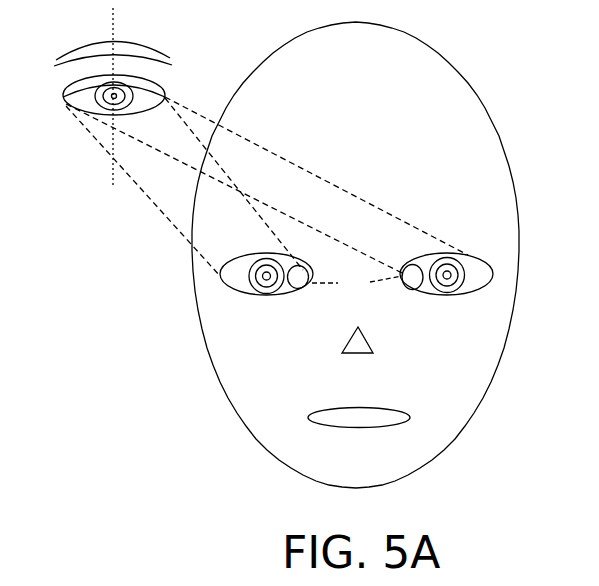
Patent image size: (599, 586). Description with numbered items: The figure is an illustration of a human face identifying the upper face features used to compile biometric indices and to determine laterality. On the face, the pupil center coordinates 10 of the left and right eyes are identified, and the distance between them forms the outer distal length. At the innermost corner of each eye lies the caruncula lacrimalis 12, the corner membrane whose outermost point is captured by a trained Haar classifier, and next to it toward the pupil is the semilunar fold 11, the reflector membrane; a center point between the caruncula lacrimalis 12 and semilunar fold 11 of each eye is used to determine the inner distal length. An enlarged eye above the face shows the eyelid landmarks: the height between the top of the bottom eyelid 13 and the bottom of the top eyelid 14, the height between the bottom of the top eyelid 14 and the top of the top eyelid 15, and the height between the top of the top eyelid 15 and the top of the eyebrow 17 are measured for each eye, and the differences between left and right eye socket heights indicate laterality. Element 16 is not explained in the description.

The pupil center coordinates 10 is at (268, 295).
The semilunar fold 11 is at (307, 272).
The caruncula lacrimalis 12 is at (357, 284).
The top of the bottom eyelid 13 is at (100, 114).
The bottom of the top eyelid 14 is at (131, 86).
The top of the top eyelid 15 is at (107, 73).
The eyebrow 16 is at (115, 50).
The top of the eyebrow 17 is at (115, 42).